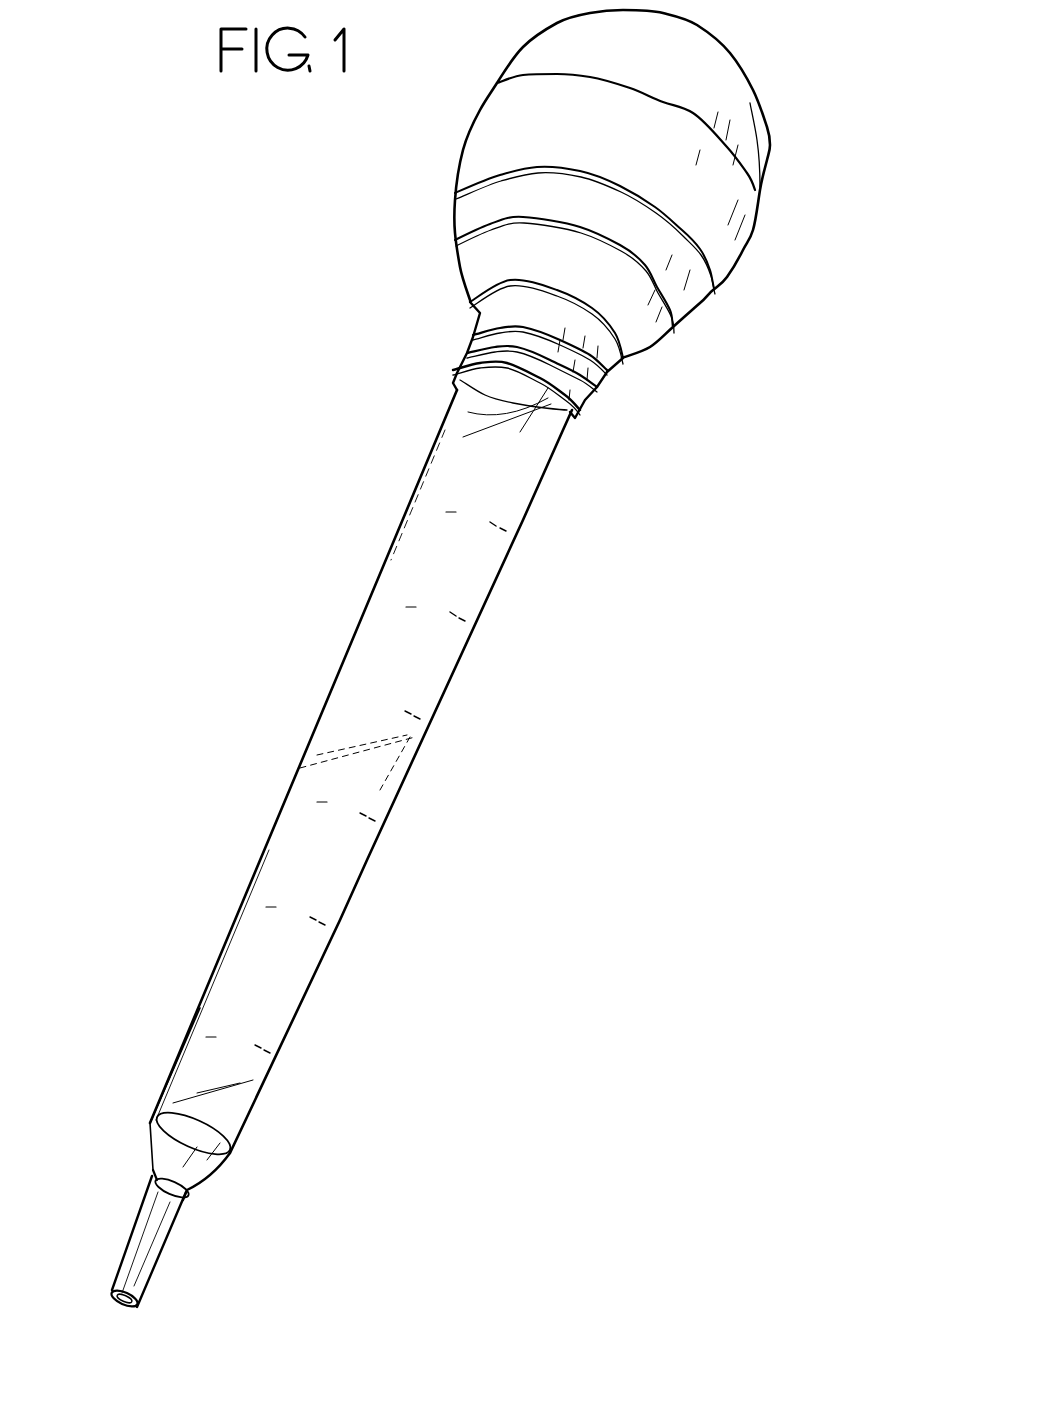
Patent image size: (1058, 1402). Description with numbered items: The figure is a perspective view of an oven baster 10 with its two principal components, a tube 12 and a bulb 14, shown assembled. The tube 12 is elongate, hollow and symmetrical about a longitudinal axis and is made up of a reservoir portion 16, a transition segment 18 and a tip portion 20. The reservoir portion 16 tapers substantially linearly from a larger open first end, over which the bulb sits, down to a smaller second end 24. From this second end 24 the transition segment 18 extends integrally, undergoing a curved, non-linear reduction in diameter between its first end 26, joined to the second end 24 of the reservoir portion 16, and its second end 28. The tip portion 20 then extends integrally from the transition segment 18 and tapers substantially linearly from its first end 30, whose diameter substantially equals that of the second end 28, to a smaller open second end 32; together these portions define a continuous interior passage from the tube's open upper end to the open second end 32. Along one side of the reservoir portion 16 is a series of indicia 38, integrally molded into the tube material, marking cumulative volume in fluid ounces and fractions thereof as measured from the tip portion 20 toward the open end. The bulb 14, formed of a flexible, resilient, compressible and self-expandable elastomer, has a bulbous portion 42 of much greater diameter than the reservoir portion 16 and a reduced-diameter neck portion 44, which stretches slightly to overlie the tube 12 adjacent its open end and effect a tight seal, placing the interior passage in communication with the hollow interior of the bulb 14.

The oven baster 10 is at (248, 495).
The tube 12 is at (433, 806).
The bulb 14 is at (838, 124).
The reservoir portion 16 is at (313, 737).
The transition segment 18 is at (207, 1183).
The tip portion 20 is at (127, 1247).
The second end of reservoir portion 24 is at (157, 1112).
The first end of transition segment 26 is at (227, 1157).
The second end of transition segment 28 is at (157, 1170).
The first end of tip portion 30 is at (187, 1200).
The open second end of tip portion 32 is at (130, 1310).
The indicia 38 is at (452, 605).
The bulbous portion 42 is at (468, 137).
The neck portion 44 is at (603, 368).